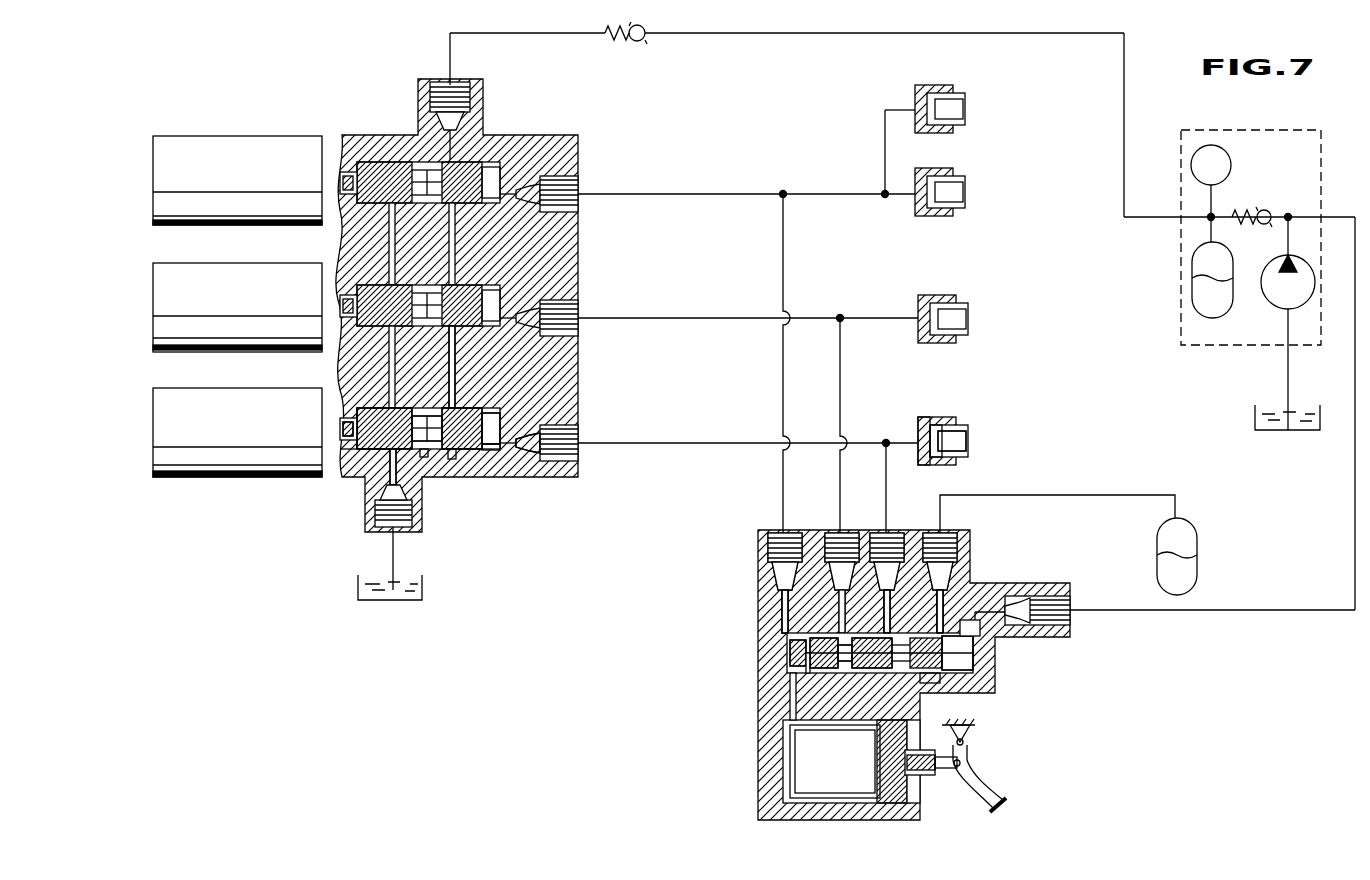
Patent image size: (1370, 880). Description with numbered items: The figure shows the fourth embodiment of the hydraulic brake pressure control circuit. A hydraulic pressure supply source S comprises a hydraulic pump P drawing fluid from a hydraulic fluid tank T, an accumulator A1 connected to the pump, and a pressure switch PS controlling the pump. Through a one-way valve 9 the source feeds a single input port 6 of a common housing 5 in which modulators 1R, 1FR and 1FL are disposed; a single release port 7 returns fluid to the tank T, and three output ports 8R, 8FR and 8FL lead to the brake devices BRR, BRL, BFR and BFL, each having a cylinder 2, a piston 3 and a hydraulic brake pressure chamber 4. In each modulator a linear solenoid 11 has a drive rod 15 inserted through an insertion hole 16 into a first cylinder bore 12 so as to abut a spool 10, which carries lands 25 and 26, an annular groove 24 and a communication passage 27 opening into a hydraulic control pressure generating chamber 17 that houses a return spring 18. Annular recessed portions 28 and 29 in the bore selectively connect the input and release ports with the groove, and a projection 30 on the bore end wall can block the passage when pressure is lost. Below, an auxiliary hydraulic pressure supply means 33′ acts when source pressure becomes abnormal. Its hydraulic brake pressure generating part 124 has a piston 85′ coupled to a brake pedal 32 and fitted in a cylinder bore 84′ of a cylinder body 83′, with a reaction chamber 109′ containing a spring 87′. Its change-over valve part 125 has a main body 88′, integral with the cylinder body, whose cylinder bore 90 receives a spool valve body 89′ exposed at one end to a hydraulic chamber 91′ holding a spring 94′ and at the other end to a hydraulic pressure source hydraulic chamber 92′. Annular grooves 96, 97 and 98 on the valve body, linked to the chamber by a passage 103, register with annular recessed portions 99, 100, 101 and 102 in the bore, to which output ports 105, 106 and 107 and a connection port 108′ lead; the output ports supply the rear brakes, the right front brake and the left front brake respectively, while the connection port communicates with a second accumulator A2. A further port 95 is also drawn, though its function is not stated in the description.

The housing 5 is at (572, 368).
The modulator 1R is at (336, 228).
The modulator 1FR is at (338, 355).
The modulator 1FL is at (325, 478).
The linear solenoid 11 is at (250, 424).
The output port 8R is at (576, 190).
The output port 8FR is at (580, 316).
The output port 8FL is at (582, 441).
The drive rod 15 is at (342, 428).
The land 25 is at (385, 410).
The annular groove 24 is at (428, 416).
The land 26 is at (454, 405).
The spool 10 is at (465, 410).
The hydraulic control pressure generating chamber 17 is at (492, 412).
The insertion hole 16 is at (345, 458).
The first cylinder bore 12 is at (365, 465).
The annular recessed portion 28 is at (388, 468).
The communication passage 27 is at (424, 462).
The annular recessed portion 29 is at (451, 462).
The return spring 18 is at (490, 455).
The projection 30 is at (520, 458).
The input port 6 is at (452, 83).
The release port 7 is at (398, 528).
The hydraulic fluid tank T is at (424, 588).
The one-way valve 9 is at (640, 42).
The hydraulic pressure supply source S is at (1246, 130).
The pressure switch PS is at (1231, 166).
The accumulator A1 is at (1192, 295).
The hydraulic pump P is at (1277, 293).
The right rear wheel brake device BRR is at (972, 112).
The left rear wheel brake device BRL is at (972, 184).
The right front wheel brake device BFR is at (975, 312).
The left front wheel brake device BFL is at (972, 434).
The hydraulic brake pressure chamber 4 is at (920, 420).
The cylinder 2 is at (930, 455).
The piston 3 is at (958, 455).
The output port 105 is at (780, 530).
The output port 106 is at (836, 530).
The output port 107 is at (880, 530).
The connection port 108′ is at (932, 530).
The main body 88′ is at (962, 552).
The auxiliary hydraulic pressure supply means 33′ is at (655, 585).
The change-over valve part 125 is at (750, 596).
The hydraulic brake pressure generating part 124 is at (750, 706).
The cylinder bore 90 is at (896, 672).
The hydraulic chamber 91′ is at (790, 652).
The hydraulic pressure source hydraulic chamber 92′ is at (965, 660).
The spring 94′ is at (808, 673).
The annular recessed portion 100 is at (845, 673).
The passage 103 is at (928, 684).
The spool valve body 89′ is at (960, 694).
The annular recessed portion 99 is at (800, 640).
The annular groove 96 is at (826, 635).
The annular groove 97 is at (864, 635).
The annular recessed portion 101 is at (890, 633).
The annular recessed portion 102 is at (942, 633).
The annular groove 98 is at (968, 626).
The return fitting 95 is at (1072, 602).
The accumulator A2 is at (1197, 562).
The cylinder bore 84′ is at (820, 803).
The reaction chamber 109′ is at (800, 757).
The spring 87′ is at (885, 803).
The cylinder body 83′ is at (912, 810).
The piston 85′ is at (920, 772).
The brake pedal 32 is at (1006, 806).